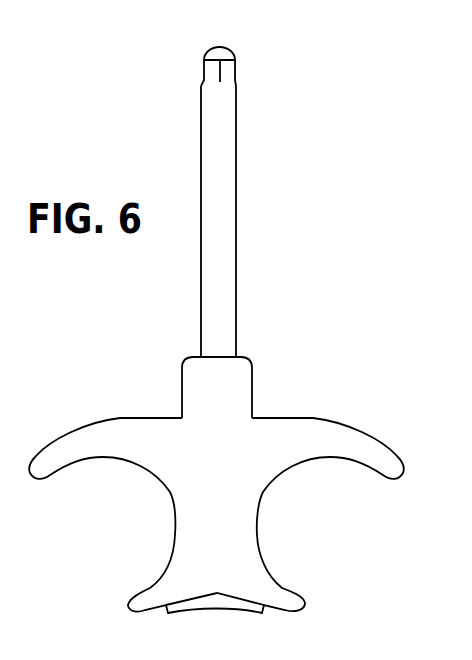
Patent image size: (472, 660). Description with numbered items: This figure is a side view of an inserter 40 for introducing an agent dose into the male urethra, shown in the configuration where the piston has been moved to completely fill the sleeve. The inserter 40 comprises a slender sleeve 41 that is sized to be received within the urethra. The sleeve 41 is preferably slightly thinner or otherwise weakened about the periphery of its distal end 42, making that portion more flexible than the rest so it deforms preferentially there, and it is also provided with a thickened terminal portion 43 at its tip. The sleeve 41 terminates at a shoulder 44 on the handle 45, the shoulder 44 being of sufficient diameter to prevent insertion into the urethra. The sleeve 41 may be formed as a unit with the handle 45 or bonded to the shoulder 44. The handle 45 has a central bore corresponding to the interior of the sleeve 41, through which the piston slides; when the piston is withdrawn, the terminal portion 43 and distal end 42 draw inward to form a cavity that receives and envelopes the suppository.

The inserter 40 is at (280, 368).
The sleeve 41 is at (236, 207).
The distal end 42 is at (236, 78).
The terminal portion 43 is at (229, 49).
The shoulder 44 is at (182, 385).
The handle 45 is at (230, 469).